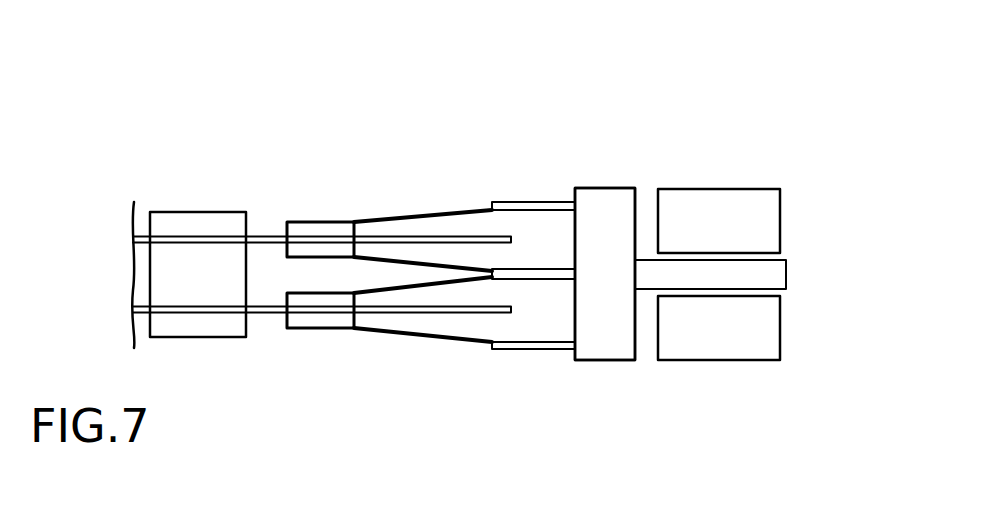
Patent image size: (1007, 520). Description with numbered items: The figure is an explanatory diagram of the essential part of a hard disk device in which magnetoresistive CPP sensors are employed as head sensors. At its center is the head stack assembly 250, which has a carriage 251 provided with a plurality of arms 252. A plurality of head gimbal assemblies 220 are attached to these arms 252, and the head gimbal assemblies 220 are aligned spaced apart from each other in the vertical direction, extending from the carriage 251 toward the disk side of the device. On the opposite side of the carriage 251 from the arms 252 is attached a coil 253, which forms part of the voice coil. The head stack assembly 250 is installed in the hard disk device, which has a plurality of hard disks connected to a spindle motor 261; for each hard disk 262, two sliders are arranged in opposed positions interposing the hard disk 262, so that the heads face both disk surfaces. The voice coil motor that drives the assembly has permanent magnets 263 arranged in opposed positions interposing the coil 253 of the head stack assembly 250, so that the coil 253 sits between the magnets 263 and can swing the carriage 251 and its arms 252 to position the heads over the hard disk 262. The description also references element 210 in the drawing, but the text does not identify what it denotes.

The resin portion / lead bonding portion 210 is at (287, 226).
The head gimbal assembly 220 is at (415, 212).
The head stack assembly 250 is at (610, 157).
The carriage 251 is at (607, 352).
The arm 252 is at (508, 200).
The coil 253 is at (773, 276).
The spindle motor 261 is at (177, 218).
The hard disk 262 is at (262, 236).
The permanent magnet 263 is at (712, 189).